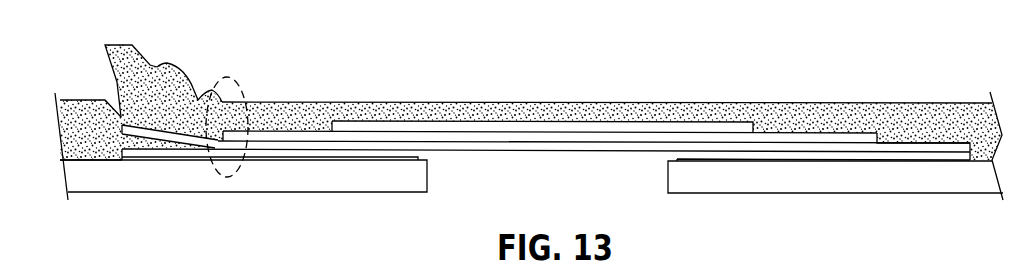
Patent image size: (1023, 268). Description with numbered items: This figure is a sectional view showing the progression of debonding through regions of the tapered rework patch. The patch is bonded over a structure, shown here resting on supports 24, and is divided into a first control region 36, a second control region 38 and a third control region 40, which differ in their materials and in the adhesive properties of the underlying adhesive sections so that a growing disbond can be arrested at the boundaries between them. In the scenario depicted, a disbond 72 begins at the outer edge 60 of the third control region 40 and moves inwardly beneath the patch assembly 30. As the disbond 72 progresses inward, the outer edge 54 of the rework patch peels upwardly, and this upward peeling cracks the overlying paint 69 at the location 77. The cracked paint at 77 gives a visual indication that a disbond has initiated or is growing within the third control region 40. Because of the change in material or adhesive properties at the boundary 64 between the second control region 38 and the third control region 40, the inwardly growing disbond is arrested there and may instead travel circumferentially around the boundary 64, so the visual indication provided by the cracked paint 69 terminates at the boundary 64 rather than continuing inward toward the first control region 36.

The support pedestal 24 is at (112, 177).
The display assembly 30 is at (620, 92).
The first control region 36 is at (377, 110).
The second control region 38 is at (297, 107).
The third control region 40 is at (160, 102).
The outer edge of the rework patch 54 is at (118, 45).
The outer edge of the third control region 60 is at (95, 88).
The boundary 64 is at (240, 82).
The overlying paint 69 is at (812, 102).
The disbond 72 is at (107, 132).
The crack in overlying paint 77 is at (147, 124).